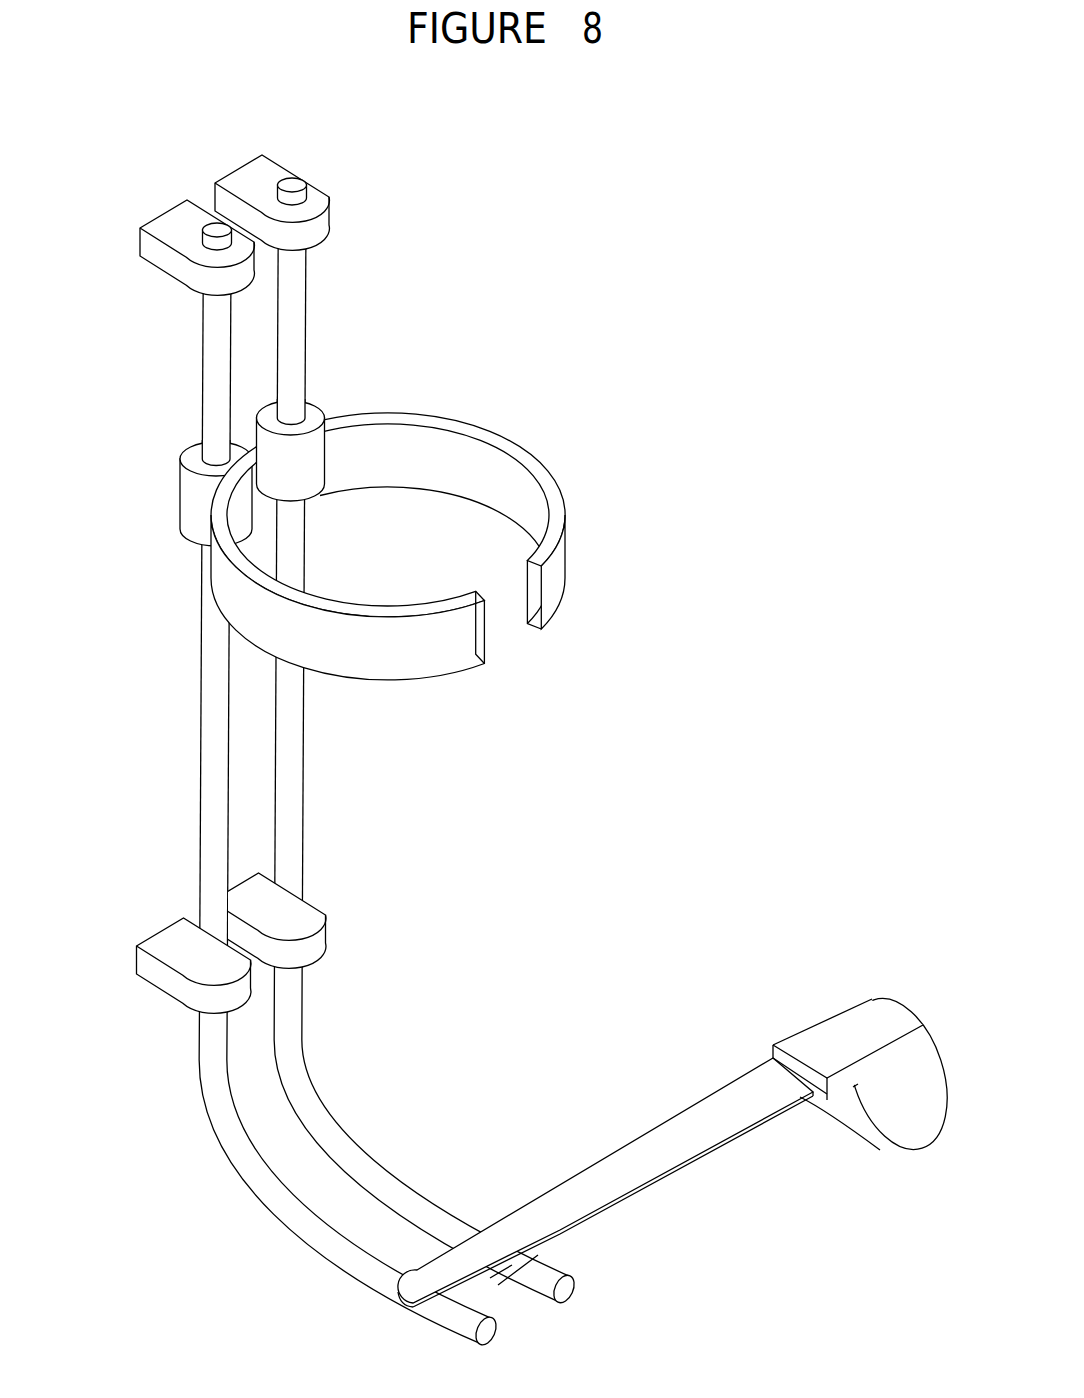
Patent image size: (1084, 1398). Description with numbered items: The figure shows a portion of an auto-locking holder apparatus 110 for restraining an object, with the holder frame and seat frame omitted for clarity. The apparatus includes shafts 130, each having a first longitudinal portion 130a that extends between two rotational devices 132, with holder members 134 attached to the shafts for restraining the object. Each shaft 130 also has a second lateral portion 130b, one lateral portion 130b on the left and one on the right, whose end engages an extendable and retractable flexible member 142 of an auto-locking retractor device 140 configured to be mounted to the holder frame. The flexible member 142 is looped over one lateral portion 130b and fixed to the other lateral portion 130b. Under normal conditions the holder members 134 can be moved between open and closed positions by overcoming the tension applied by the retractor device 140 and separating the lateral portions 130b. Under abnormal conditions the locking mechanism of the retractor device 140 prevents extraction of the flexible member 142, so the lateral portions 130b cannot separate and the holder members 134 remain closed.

The auto-locking holder apparatus 110 is at (466, 244).
The shafts 130 is at (300, 343).
The first longitudinal portion 130a is at (206, 775).
The second lateral portion 130b is at (390, 1183).
The rotational devices 132 is at (317, 193).
The holder members 134 is at (517, 487).
The auto-locking retractor device 140 is at (842, 1025).
The flexible member 142 is at (632, 1160).